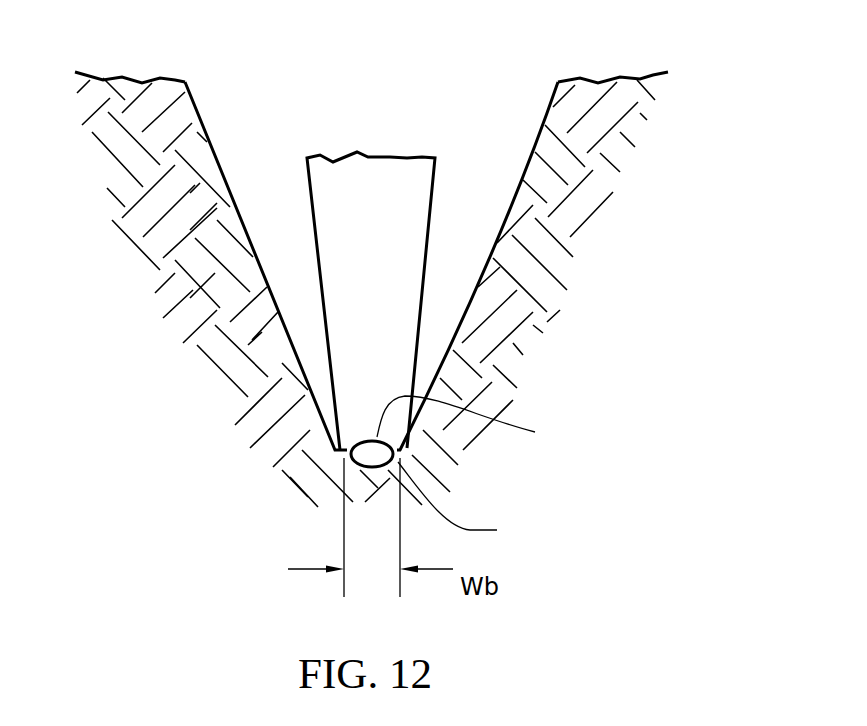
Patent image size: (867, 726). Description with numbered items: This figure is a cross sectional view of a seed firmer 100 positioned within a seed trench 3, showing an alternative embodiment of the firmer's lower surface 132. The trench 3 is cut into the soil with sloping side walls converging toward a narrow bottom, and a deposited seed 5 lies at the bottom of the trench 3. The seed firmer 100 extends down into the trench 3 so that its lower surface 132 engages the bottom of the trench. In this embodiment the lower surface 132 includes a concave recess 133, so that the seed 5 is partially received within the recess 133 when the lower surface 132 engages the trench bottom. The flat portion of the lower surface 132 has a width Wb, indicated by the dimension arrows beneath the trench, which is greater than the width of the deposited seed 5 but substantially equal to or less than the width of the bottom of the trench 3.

The trench 3 is at (498, 127).
The seed firmer 100 is at (333, 160).
The seed 5 is at (350, 462).
The lower surface 132 is at (469, 503).
The concave recess 133 is at (479, 420).